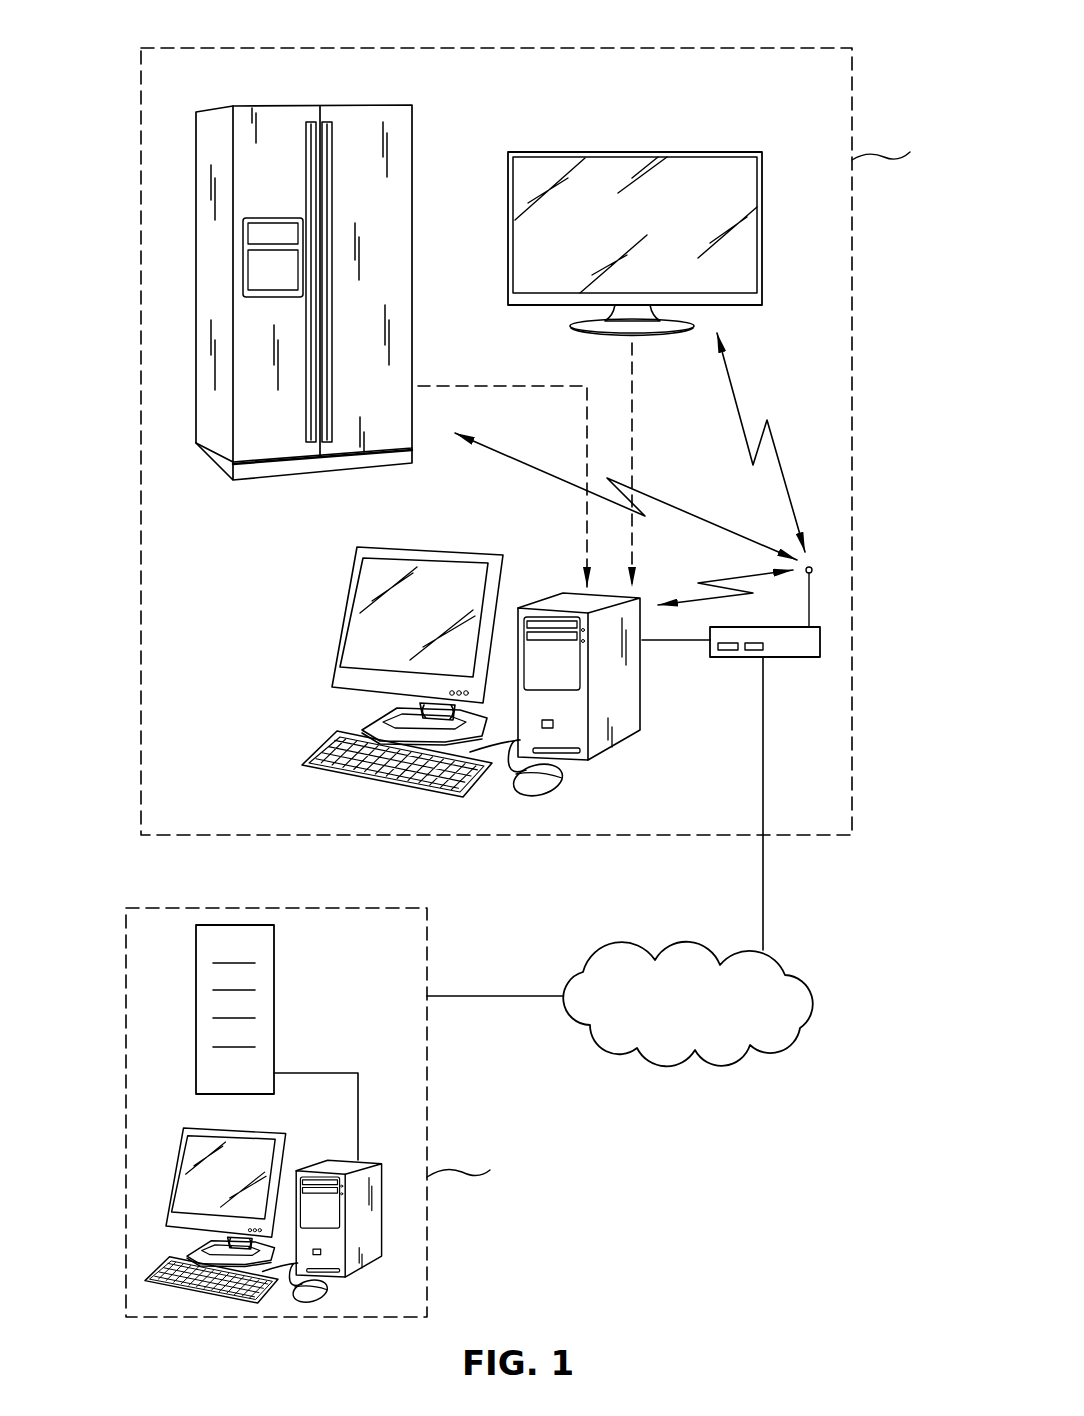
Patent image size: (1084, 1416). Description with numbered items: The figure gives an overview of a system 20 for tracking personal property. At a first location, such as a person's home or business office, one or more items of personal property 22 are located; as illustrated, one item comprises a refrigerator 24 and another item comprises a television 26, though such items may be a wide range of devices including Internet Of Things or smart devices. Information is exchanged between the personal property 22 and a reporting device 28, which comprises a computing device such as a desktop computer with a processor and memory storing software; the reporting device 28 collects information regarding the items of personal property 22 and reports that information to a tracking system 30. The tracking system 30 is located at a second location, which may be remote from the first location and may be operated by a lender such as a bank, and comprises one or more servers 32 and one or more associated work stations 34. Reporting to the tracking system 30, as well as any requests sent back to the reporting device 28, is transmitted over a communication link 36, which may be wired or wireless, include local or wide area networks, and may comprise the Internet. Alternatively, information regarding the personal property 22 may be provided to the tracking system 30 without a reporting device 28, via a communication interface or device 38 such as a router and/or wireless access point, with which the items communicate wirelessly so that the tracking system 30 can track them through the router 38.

The system 20 is at (842, 890).
The items of personal property 22 is at (557, 85).
The refrigerator 24 is at (365, 121).
The television 26 is at (707, 165).
The reporting device 28 is at (522, 548).
The tracking system 30 is at (158, 1043).
The server 32 is at (277, 978).
The work station 34 is at (383, 1270).
The communication link 36 is at (740, 1060).
The communication interface or device 38 is at (803, 650).